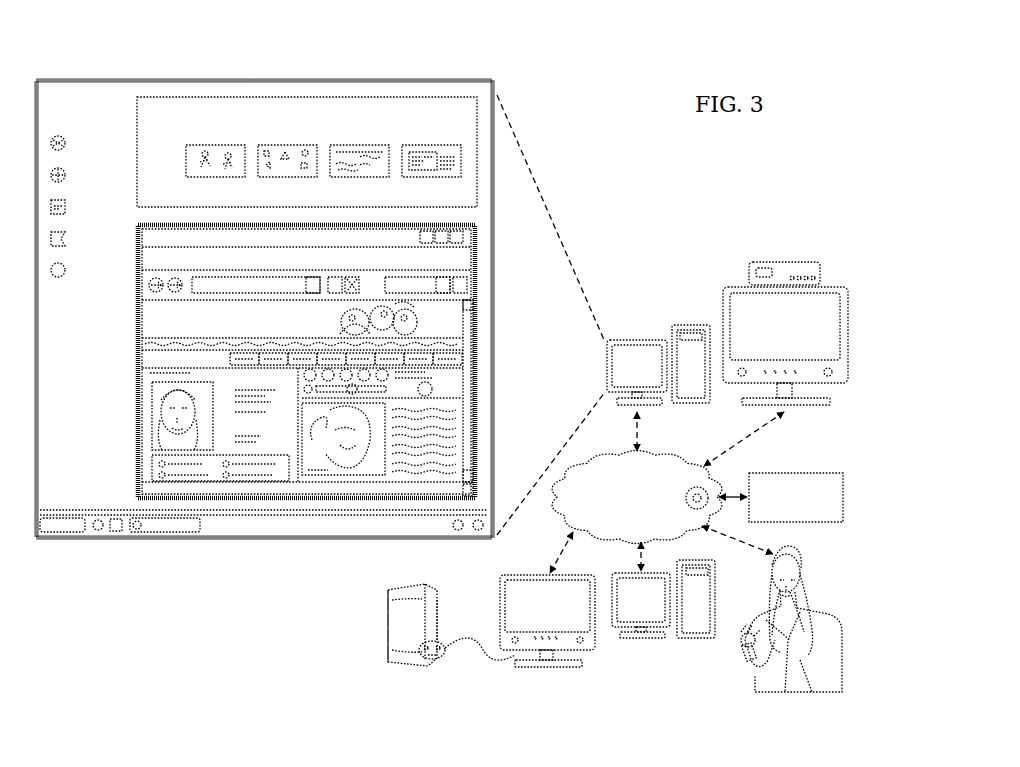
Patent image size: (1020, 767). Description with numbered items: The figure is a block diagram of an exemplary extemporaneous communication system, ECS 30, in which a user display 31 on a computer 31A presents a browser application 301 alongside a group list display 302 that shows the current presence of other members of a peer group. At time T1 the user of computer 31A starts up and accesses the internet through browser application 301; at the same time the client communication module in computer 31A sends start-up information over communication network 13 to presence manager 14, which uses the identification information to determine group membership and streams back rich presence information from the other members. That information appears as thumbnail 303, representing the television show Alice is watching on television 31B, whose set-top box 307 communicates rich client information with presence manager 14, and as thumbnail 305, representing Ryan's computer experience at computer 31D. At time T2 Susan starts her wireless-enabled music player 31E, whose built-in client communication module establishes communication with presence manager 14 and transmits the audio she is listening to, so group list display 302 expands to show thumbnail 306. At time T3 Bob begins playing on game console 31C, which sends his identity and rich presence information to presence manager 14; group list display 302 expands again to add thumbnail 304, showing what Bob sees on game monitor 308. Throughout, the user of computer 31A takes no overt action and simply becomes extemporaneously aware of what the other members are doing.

The ECS 30 is at (704, 190).
The user terminal display 31 is at (150, 541).
The browser application 301 is at (135, 453).
The group list display 302 is at (135, 147).
The thumbnail 303 is at (203, 143).
The thumbnail 304 is at (275, 143).
The thumbnail 305 is at (372, 143).
The thumbnail 306 is at (445, 143).
The set-top box 307 is at (782, 261).
The game monitor 308 is at (533, 573).
The computer 31A is at (691, 324).
The television 31B is at (835, 285).
The game console 31C is at (498, 601).
The computer 31D is at (692, 641).
The wireless-enabled music player (WEMP) 31E is at (815, 578).
The communication network 13 is at (661, 455).
The presence manager 14 is at (806, 472).
The time T1 is at (288, 145).
The time T2 is at (430, 145).
The time T3 is at (360, 143).